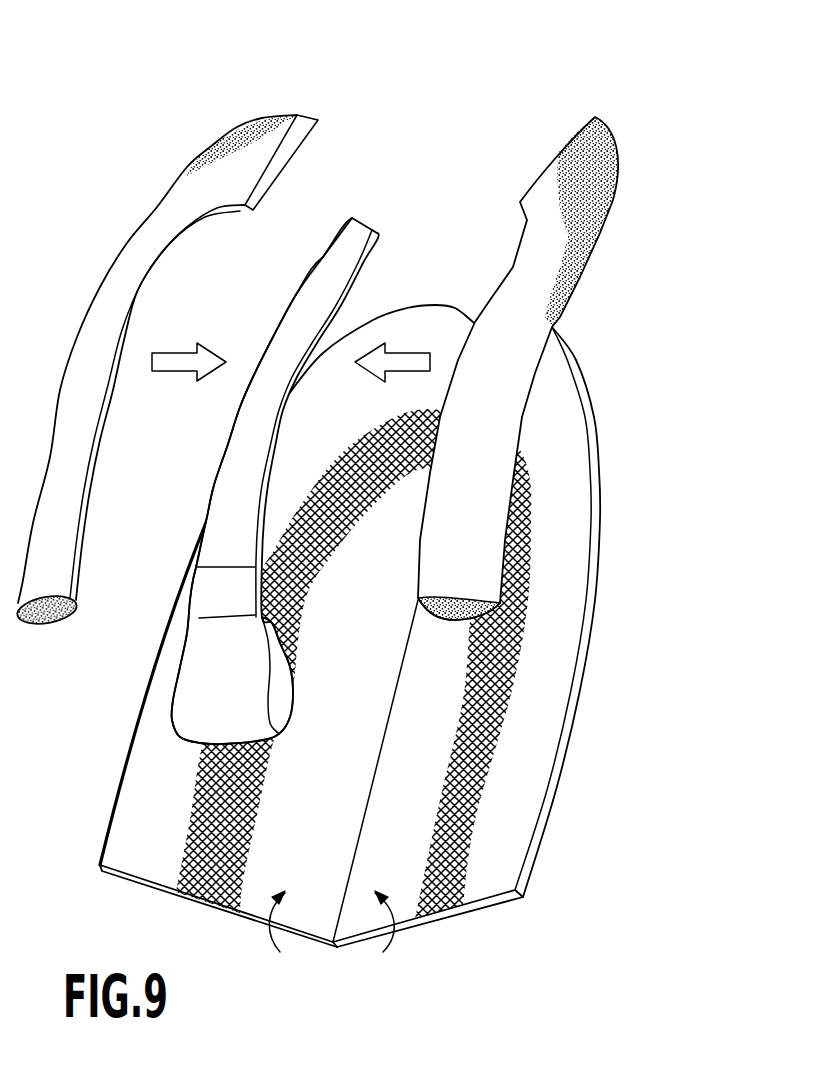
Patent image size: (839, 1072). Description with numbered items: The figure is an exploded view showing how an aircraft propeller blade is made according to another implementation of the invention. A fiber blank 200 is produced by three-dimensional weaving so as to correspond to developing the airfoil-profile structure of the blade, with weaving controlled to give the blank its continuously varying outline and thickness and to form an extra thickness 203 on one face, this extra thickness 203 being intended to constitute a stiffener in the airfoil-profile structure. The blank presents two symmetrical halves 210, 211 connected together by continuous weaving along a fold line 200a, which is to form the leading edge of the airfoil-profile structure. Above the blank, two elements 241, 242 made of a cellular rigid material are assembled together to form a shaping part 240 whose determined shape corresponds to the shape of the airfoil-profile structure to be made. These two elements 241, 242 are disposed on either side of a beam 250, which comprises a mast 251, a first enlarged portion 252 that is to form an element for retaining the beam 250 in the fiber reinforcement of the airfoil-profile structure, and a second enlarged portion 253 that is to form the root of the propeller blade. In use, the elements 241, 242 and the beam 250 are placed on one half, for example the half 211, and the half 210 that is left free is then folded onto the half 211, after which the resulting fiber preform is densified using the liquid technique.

The fiber blank 200 is at (306, 650).
The fold line 200a is at (338, 950).
The extra thickness 203 is at (212, 907).
The half 210 is at (128, 877).
The half 211 is at (476, 910).
The shaping part 240 is at (316, 324).
The element 241 is at (205, 355).
The element 242 is at (578, 131).
The beam 250 is at (270, 455).
The mast 251 is at (297, 317).
The first enlarged portion 252 is at (211, 587).
The second enlarged portion 253 is at (195, 690).